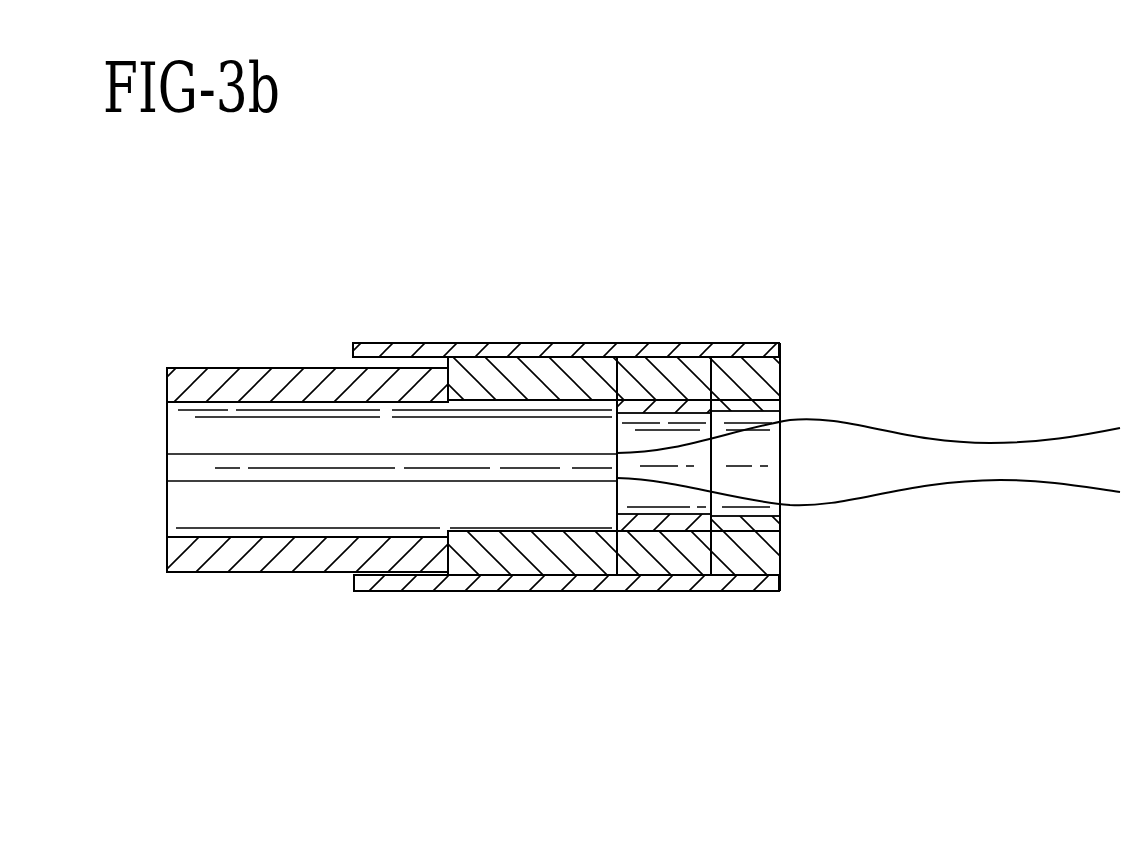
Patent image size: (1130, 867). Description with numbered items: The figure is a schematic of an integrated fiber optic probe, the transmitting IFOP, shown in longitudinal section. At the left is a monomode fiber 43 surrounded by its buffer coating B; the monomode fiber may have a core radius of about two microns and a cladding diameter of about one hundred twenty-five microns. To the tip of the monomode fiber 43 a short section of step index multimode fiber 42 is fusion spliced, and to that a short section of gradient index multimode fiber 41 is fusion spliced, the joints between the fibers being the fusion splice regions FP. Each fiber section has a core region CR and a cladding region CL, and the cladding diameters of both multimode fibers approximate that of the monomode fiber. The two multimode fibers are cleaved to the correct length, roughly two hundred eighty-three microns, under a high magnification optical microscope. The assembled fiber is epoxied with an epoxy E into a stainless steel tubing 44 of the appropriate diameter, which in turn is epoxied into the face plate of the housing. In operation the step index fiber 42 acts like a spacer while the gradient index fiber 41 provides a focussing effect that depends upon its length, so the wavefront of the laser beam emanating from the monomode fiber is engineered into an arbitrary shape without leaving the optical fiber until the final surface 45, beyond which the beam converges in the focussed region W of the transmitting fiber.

The buffer coating of optical fiber B is at (236, 384).
The stainless steel tubing 44 is at (383, 350).
The epoxy E is at (467, 385).
The monomode fiber 43 is at (510, 463).
The step index multimode fiber 42 is at (667, 378).
The gradient index multimode fiber 41 is at (757, 378).
The fusion splice regions FP is at (617, 378).
The cladding region of optical fiber CL is at (494, 513).
The core region of optical fiber CR is at (535, 460).
The focussed region of the transmitting fiber W is at (1020, 430).
The final surface 45 is at (781, 465).